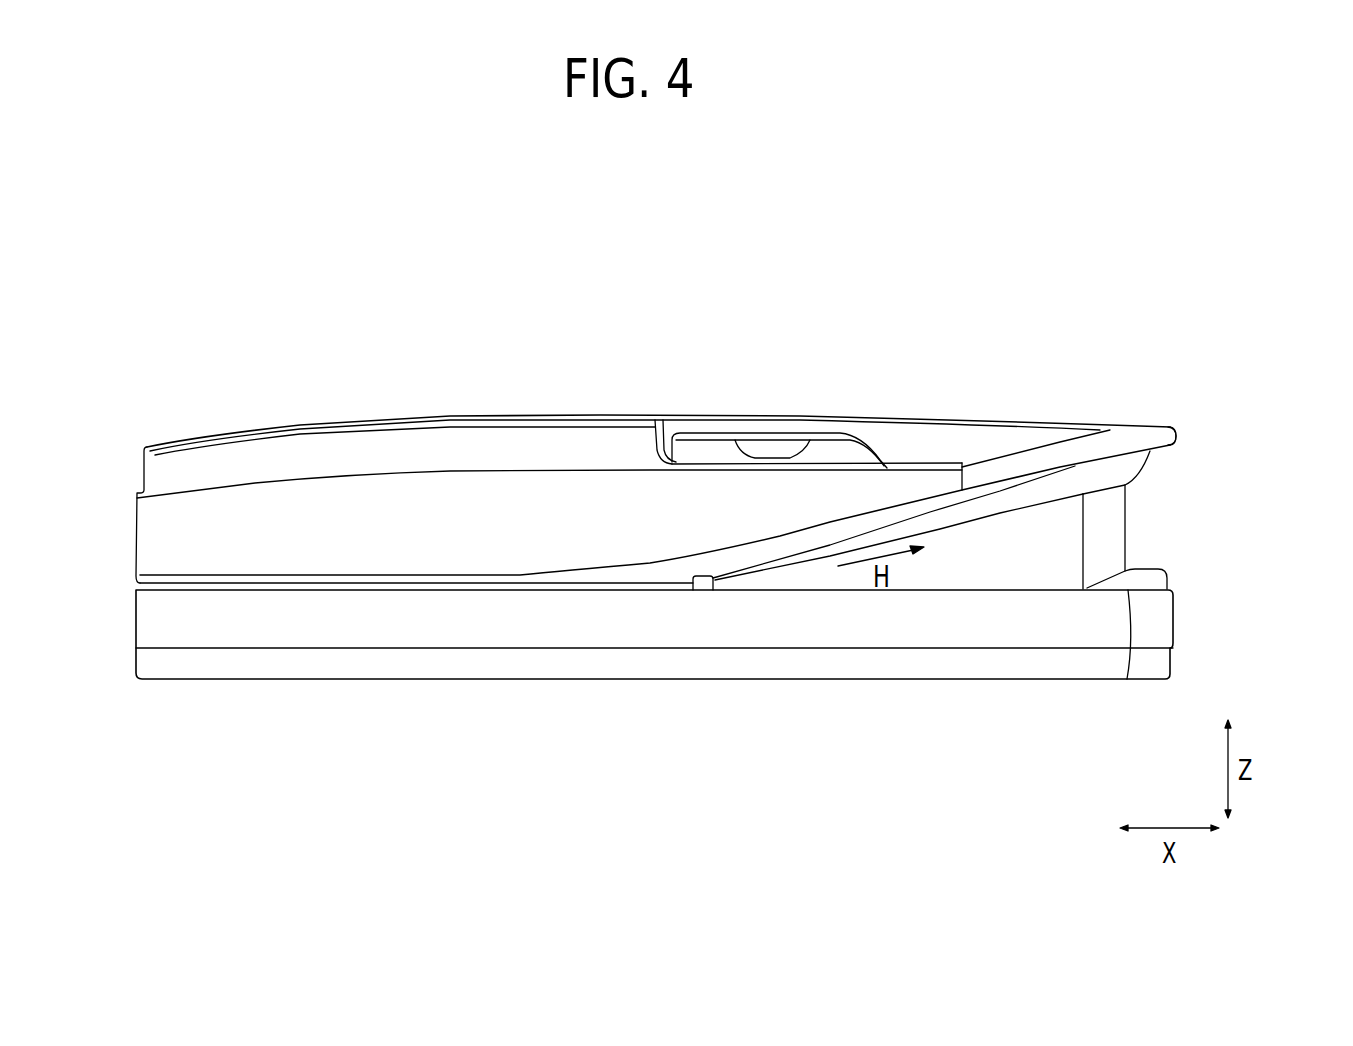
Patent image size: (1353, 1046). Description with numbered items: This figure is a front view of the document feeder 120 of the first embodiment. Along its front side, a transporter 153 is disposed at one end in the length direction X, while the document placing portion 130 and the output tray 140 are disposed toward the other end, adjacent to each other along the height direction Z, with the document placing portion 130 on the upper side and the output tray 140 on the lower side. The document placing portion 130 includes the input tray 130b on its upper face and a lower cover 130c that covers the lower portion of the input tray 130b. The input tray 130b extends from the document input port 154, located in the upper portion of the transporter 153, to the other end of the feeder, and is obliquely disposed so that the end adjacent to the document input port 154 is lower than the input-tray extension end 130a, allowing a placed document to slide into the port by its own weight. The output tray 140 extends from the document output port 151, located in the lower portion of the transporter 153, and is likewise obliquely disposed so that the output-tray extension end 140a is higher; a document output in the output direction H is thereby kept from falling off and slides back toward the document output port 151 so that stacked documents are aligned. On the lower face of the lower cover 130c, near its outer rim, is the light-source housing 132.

The document feeder 120 is at (952, 392).
The document placing portion 130 is at (992, 473).
The input-tray extension end 130a is at (1177, 436).
The input tray 130b is at (1014, 455).
The lower cover 130c is at (997, 497).
The light-source housing 132 is at (1037, 487).
The output tray 140 is at (703, 602).
The output-tray extension end 140a is at (1168, 578).
The document output port 151 is at (697, 592).
The transporter 153 is at (402, 452).
The document input port 154 is at (637, 450).